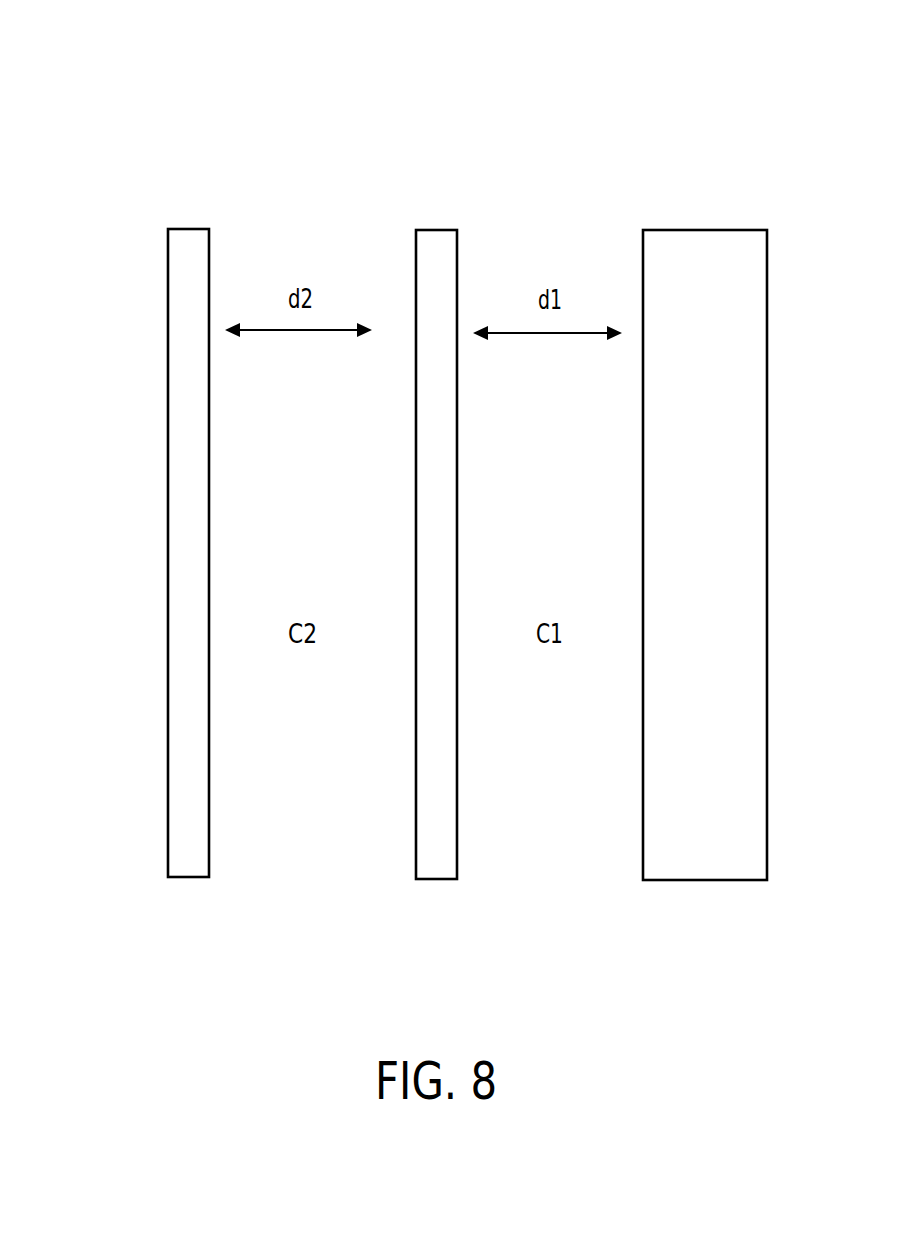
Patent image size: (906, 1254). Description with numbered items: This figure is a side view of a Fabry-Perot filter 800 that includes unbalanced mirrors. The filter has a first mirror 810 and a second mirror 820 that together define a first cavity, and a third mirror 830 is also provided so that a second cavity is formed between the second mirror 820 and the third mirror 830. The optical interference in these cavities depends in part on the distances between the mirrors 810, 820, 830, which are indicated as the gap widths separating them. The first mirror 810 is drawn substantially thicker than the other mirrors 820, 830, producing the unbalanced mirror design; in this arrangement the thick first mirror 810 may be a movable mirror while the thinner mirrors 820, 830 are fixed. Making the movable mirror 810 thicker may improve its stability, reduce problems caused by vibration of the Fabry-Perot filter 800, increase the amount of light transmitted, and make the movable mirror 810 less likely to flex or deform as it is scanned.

The Fabry-Perot filter 800 is at (186, 54).
The first mirror 810 is at (643, 519).
The second mirror 820 is at (416, 518).
The third mirror 830 is at (168, 517).